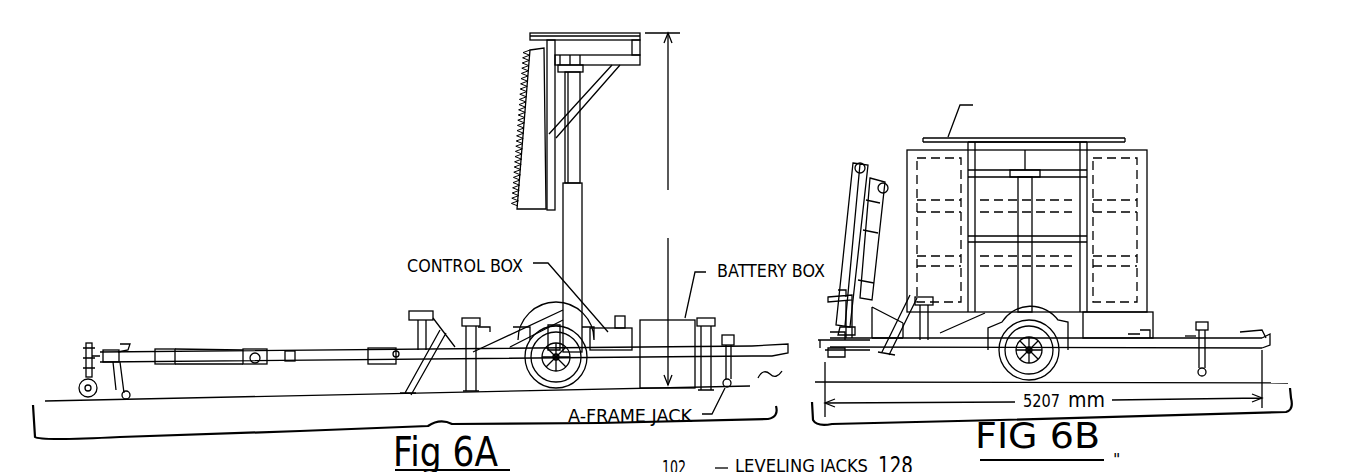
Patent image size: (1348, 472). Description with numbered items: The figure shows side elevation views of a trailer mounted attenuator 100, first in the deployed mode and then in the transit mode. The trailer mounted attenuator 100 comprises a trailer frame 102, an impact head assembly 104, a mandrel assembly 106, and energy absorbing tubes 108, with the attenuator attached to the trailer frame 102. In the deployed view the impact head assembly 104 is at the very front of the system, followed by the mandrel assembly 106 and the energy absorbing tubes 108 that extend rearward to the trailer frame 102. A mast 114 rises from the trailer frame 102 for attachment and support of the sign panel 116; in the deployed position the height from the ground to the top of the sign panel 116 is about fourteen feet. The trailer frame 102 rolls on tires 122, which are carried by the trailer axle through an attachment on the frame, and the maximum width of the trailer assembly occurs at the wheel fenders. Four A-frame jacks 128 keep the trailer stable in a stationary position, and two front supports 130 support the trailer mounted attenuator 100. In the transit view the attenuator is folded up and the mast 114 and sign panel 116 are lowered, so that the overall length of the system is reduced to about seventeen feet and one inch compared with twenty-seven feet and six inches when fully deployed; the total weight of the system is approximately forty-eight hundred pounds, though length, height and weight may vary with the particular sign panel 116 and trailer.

In FIG. 6A, the trailer mounted attenuator 100 is at (259, 215).
In FIG. 6B, the trailer frame 102 is at (1214, 336).
In FIG. 6A, the impact head assembly 104 is at (87, 338).
In FIG. 6A, the mandrel assembly 106 is at (111, 345).
In FIG. 6A, the energy absorbing tubes 108 is at (200, 352).
In FIG. 6A, the mast 114 is at (576, 238).
In FIG. 6B, the mast 114 is at (1033, 223).
In FIG. 6A, the sign panel 116 is at (520, 128).
In FIG. 6B, the sign panel 116 is at (912, 150).
In FIG. 6A, the tires 122 is at (578, 373).
In FIG. 6B, the tires 122 is at (1053, 363).
In FIG. 6A, the A-frame jacks 128 is at (445, 414).
In FIG. 6B, the A-frame jacks 128 is at (1208, 368).
In FIG. 6A, the front supports 130 is at (412, 373).
In FIG. 6B, the front supports 130 is at (913, 352).